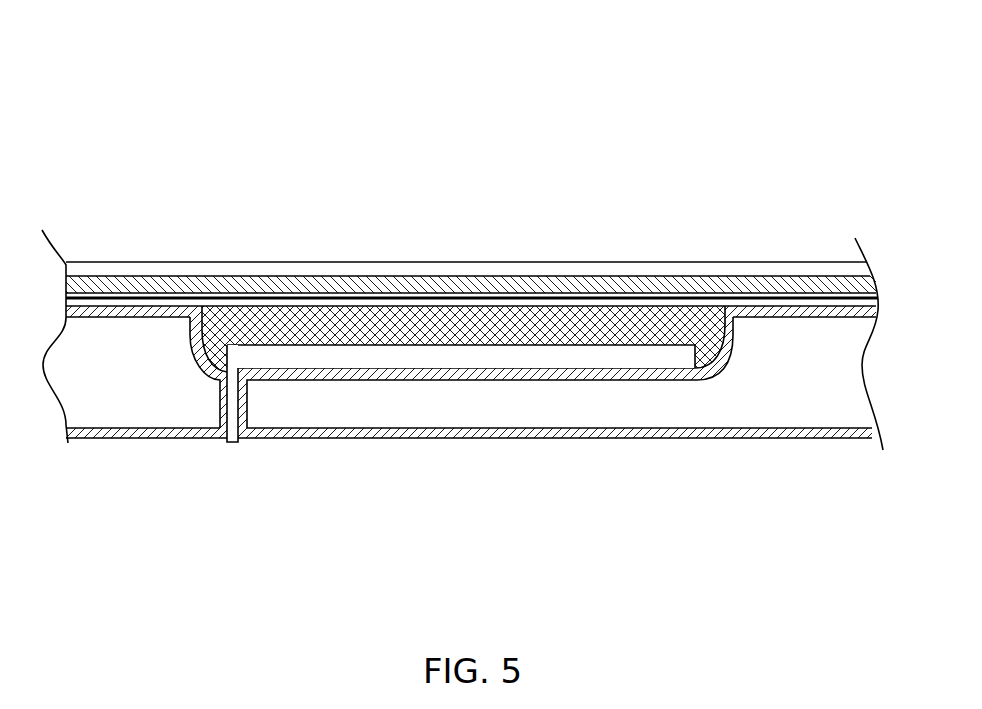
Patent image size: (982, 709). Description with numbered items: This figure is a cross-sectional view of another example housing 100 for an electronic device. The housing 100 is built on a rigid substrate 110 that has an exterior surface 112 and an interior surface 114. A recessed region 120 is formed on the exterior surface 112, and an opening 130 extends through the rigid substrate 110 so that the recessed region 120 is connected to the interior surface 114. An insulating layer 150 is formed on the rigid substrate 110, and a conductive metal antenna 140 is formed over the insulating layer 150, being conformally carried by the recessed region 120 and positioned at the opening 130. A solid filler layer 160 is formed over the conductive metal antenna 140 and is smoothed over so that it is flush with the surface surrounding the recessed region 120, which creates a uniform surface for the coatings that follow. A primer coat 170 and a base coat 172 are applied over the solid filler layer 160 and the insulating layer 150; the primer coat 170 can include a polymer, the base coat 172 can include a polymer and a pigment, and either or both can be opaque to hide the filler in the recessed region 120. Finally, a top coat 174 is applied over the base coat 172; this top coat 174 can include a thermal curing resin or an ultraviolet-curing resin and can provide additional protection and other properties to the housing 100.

The housing 100 is at (158, 78).
The rigid substrate 110 is at (323, 417).
The exterior surface 112 is at (818, 316).
The interior surface 114 is at (743, 433).
The recessed region 120 is at (472, 203).
The opening 130 is at (228, 463).
The conductive metal antenna 140 is at (400, 352).
The insulating layer 150 is at (427, 437).
The solid filler layer 160 is at (506, 325).
The primer coat 170 is at (294, 304).
The base coat 172 is at (202, 290).
The top coat 174 is at (574, 270).